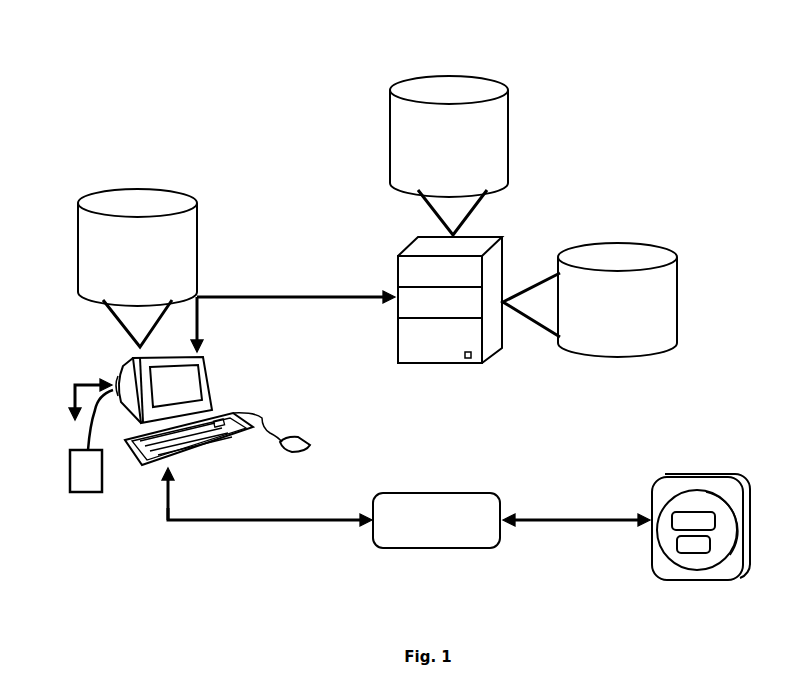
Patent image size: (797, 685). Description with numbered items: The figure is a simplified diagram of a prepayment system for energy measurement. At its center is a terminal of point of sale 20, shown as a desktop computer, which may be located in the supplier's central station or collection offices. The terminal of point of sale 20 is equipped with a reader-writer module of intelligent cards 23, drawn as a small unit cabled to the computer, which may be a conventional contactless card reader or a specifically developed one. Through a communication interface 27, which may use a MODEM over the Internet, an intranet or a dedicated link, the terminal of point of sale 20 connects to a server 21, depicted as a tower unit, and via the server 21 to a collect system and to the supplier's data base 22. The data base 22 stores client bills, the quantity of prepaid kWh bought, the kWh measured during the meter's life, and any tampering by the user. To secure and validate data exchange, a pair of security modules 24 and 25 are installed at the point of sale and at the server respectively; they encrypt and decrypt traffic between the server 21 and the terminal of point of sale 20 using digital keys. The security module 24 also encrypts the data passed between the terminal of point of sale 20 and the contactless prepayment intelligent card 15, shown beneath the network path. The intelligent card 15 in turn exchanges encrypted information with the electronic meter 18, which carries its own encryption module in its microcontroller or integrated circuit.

The prepayment intelligent card 15 is at (428, 485).
The electronic meter 18 is at (692, 465).
The terminal of point of sale 20 is at (218, 375).
The server 21 is at (447, 377).
The data base 22 is at (695, 275).
The reader-writer module of intelligent cards 23 is at (58, 480).
The security module 24 is at (138, 174).
The security module 25 is at (452, 67).
The communication interface 27 is at (272, 285).